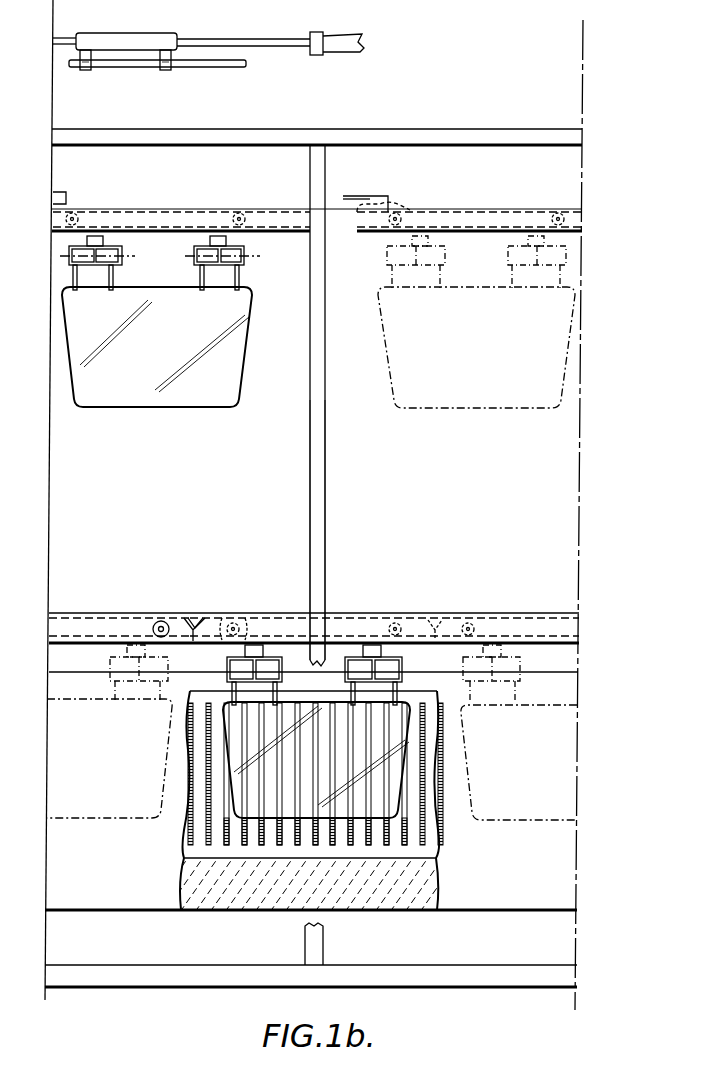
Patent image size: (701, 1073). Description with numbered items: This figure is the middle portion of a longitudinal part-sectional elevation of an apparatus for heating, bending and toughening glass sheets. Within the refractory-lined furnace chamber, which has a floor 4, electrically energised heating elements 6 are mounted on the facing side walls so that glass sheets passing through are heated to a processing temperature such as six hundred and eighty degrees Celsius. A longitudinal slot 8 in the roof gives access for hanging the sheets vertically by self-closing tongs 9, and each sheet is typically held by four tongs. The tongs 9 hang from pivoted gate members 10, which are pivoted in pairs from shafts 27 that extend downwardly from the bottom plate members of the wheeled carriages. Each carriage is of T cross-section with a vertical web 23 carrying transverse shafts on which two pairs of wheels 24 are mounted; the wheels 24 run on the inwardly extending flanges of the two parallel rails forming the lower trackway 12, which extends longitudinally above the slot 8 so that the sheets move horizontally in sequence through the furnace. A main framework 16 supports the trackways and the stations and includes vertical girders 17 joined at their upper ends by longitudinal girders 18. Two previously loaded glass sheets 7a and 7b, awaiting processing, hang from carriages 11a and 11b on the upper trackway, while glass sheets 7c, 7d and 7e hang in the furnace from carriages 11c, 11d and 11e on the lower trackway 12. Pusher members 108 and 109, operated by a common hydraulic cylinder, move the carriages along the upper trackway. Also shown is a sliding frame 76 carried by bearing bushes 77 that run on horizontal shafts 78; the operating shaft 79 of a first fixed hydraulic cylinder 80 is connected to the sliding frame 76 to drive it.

The floor 4 is at (400, 906).
The heating elements 6 is at (406, 832).
The glass sheet 7a is at (167, 358).
The glass sheet 7b is at (486, 360).
The glass sheet 7c is at (535, 778).
The glass sheet 7d is at (326, 777).
The glass sheet 7e is at (110, 776).
The longitudinal slot 8 is at (432, 688).
The self-closing tongs 9 is at (78, 288).
The pivoted gate member 10 is at (122, 262).
The carriage 11a is at (185, 222).
The carriage 11b is at (497, 222).
The carriage 11c is at (548, 620).
The carriage 11d is at (285, 628).
The carriage 11e is at (83, 625).
The lower trackway 12 is at (123, 618).
The main framework 16 is at (334, 178).
The vertical girder 17 is at (318, 470).
The longitudinal girder 18 is at (270, 130).
The vertical web 23 is at (184, 622).
The wheels 24 is at (163, 620).
The shaft 27 is at (120, 257).
The sliding frame 76 is at (146, 35).
The bearing bushes 77 is at (86, 72).
The horizontal shaft 78 is at (117, 66).
The operating shaft 79 is at (265, 38).
The first fixed hydraulic cylinder 80 is at (362, 34).
The pusher member 108 is at (60, 200).
The pusher member 109 is at (390, 196).